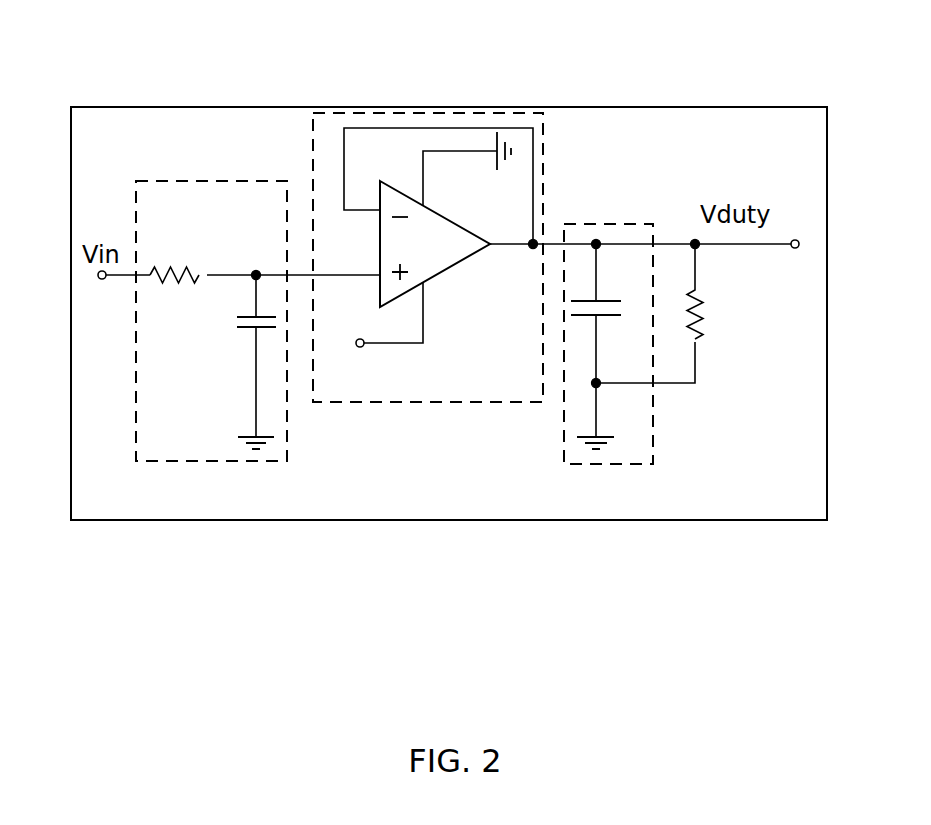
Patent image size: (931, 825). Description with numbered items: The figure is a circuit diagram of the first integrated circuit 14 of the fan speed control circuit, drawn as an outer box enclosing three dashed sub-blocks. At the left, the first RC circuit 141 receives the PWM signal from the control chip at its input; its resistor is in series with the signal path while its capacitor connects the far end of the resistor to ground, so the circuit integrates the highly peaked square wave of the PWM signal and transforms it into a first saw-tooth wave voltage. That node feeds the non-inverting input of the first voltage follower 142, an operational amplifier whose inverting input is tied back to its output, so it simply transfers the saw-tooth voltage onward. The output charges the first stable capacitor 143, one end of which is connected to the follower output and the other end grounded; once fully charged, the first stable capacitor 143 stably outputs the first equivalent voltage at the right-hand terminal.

The first integrated circuit 14 is at (727, 107).
The first RC circuit 141 is at (205, 181).
The first voltage follower 142 is at (345, 114).
The first stable capacitor 143 is at (597, 224).